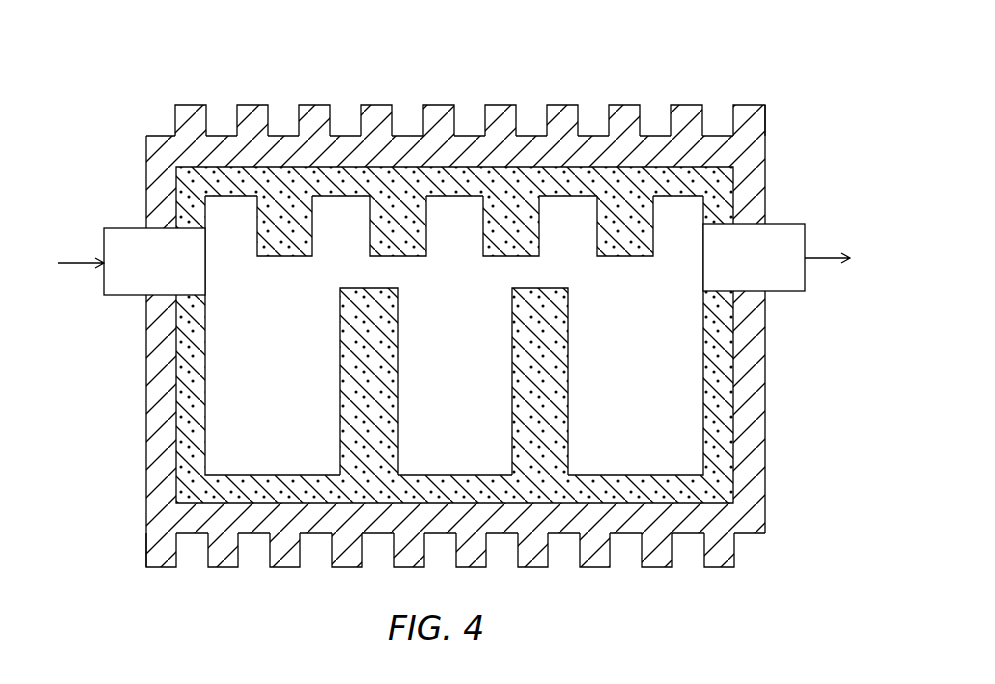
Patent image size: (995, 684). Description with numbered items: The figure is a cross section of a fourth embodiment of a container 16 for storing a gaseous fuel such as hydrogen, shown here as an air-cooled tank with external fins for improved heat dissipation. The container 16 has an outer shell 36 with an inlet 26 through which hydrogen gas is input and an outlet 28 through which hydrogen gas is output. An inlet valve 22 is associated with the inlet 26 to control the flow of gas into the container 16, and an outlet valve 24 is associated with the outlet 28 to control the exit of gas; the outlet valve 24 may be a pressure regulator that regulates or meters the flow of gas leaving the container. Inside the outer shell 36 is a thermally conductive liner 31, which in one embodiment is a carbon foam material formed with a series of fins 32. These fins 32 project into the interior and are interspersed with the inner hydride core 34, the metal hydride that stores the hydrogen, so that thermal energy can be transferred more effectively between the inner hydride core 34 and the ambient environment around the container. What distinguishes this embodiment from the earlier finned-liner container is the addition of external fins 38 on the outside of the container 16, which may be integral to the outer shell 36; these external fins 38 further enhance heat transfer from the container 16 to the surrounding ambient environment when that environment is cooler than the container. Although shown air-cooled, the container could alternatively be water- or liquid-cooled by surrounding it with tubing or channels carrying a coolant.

The container 16 is at (454, 332).
The inlet valve 22 is at (118, 240).
The outlet valve 24 is at (805, 238).
The inlet 26 is at (104, 280).
The outlet 28 is at (805, 275).
The thermally conductive liner 31 is at (348, 242).
The fins 32 is at (350, 310).
The inner hydride core 34 is at (460, 404).
The outer shell 36 is at (622, 112).
The external fins 38 is at (252, 105).